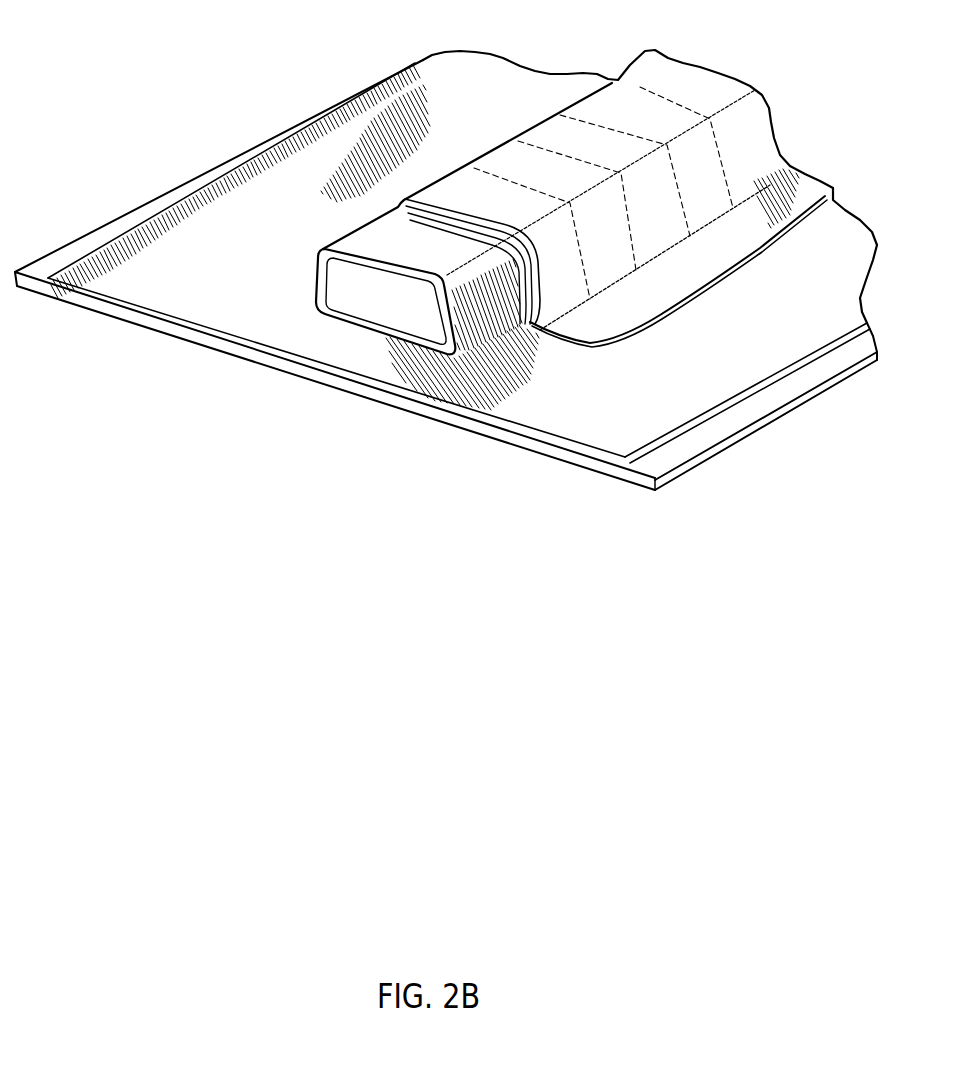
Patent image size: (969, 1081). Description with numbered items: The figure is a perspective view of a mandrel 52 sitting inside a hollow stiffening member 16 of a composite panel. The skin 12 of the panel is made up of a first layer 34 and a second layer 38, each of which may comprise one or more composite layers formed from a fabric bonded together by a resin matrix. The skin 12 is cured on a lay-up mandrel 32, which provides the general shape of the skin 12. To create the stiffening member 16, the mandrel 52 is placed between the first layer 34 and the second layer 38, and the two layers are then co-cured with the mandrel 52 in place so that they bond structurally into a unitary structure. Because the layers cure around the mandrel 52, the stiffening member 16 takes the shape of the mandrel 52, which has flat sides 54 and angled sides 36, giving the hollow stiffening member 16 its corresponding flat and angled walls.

The skin 12 is at (410, 407).
The stiffening member 16 is at (492, 142).
The lay-up mandrel 32 is at (133, 328).
The first layer 34 is at (705, 427).
The angled sides 36 is at (500, 336).
The second layer 38 is at (663, 318).
The mandrel 52 is at (318, 262).
The flat sides 54 is at (376, 322).